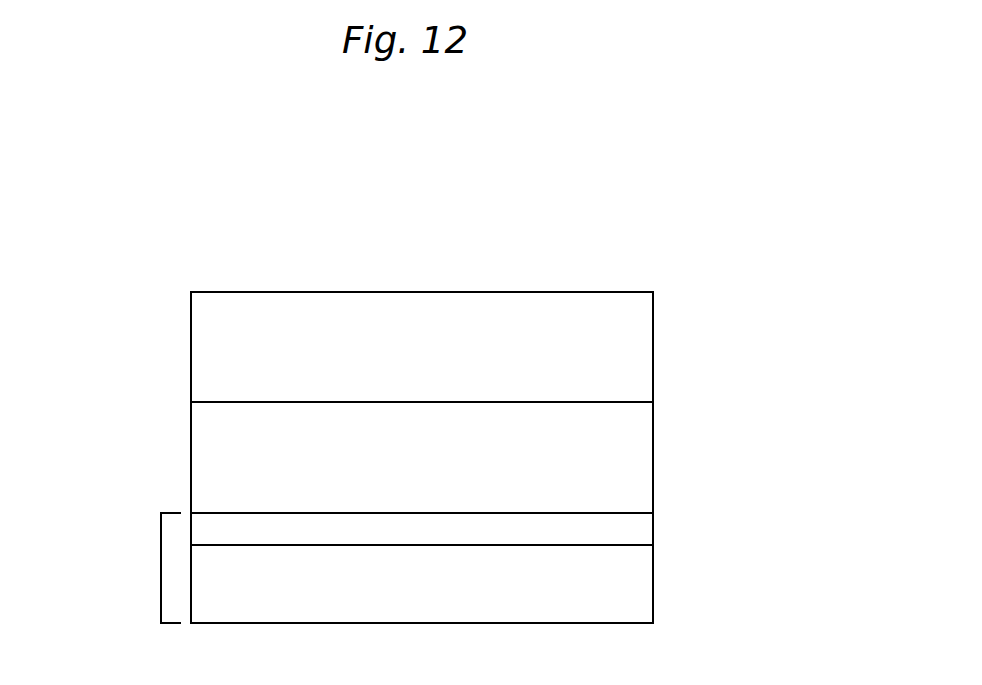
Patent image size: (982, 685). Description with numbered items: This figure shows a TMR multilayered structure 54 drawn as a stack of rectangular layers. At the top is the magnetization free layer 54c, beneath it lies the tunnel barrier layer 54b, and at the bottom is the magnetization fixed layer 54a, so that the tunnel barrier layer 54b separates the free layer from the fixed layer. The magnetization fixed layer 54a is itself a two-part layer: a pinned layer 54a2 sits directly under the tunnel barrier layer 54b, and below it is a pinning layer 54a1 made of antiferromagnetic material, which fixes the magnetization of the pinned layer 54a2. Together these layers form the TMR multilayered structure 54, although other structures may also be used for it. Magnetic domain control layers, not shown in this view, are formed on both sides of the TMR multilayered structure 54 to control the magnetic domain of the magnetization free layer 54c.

The TMR multilayered structure 54 is at (668, 467).
The magnetization fixed layer 54a is at (161, 573).
The pinning layer 54a1 is at (668, 585).
The pinned layer 54a2 is at (668, 528).
The tunnel barrier layer 54b is at (168, 468).
The magnetization free layer 54c is at (175, 361).